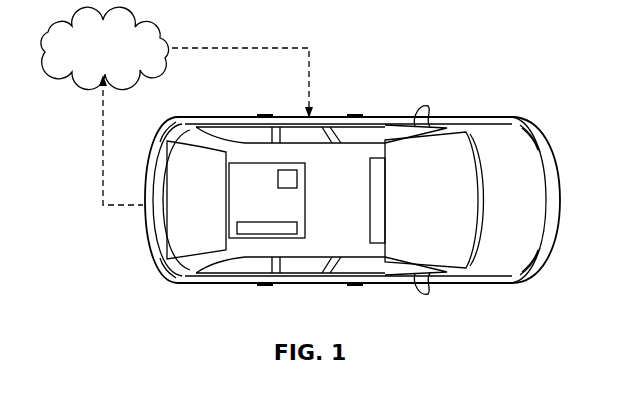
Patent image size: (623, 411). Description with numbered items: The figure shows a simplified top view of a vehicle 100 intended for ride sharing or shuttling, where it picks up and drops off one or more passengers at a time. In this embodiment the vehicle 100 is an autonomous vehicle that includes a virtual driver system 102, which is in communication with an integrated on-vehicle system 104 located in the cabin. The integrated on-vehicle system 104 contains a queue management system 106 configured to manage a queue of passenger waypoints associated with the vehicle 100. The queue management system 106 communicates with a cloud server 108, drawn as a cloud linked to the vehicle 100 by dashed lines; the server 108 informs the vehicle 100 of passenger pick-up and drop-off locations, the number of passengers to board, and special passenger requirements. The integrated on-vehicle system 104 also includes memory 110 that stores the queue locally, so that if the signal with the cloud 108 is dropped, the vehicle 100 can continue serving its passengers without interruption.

The vehicle 100 is at (528, 120).
The virtual driver system 102 is at (378, 157).
The integrated on-vehicle system 104 is at (275, 240).
The queue management system 106 is at (305, 228).
The cloud server 108 is at (177, 106).
The memory 110 is at (297, 178).